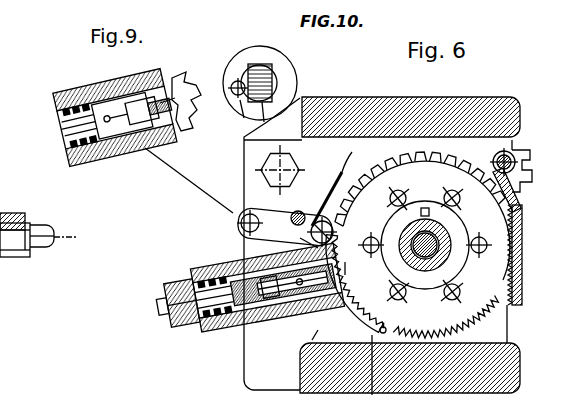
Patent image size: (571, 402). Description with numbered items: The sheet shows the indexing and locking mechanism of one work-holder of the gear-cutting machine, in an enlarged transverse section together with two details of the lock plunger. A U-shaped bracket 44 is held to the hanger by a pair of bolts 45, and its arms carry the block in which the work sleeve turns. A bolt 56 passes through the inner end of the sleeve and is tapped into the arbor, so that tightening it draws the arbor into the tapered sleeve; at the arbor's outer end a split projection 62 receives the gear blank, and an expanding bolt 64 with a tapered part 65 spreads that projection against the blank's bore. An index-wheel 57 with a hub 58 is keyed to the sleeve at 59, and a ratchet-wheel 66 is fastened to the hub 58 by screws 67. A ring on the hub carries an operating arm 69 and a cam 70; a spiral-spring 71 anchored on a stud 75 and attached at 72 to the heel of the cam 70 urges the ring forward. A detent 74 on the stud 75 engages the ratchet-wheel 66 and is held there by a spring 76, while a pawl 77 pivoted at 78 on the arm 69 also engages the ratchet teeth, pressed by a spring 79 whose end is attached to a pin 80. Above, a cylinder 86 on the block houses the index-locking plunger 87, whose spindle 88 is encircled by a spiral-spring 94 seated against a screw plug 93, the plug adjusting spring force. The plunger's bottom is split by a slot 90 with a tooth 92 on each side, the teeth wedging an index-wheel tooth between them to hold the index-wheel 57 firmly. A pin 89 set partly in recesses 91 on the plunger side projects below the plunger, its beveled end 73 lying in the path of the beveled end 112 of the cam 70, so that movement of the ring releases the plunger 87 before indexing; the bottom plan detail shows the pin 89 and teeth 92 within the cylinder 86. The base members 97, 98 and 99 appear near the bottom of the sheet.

In FIG. 6, the U-shaped bracket 44 is at (291, 170).
In FIG. 6, the bolt 45 is at (270, 170).
In FIG. 6, the bolt 56 is at (451, 252).
In FIG. 9, the index-wheel 57 is at (192, 120).
In FIG. 6, the index-wheel 57 is at (440, 155).
In FIG. 6, the hub 58 is at (455, 236).
In FIG. 6, the key 59 is at (420, 213).
In FIG. 6, the split projection 62 is at (5, 215).
In FIG. 6, the expanding bolt 64 is at (42, 231).
In FIG. 6, the tapered part 65 is at (22, 242).
In FIG. 6, the ratchet-wheel 66 is at (467, 312).
In FIG. 6, the screws 67 is at (404, 198).
In FIG. 6, the operating arm 69 is at (240, 222).
In FIG. 6, the cam 70 is at (353, 303).
In FIG. 6, the spiral-spring 71 is at (508, 312).
In FIG. 6, the spring attachment point 72 is at (365, 368).
In FIG. 10, the beveled end of pin 73 is at (231, 88).
In FIG. 6, the beveled end of pin 73 is at (312, 340).
In FIG. 6, the detent 74 is at (512, 190).
In FIG. 6, the stud 75 is at (513, 159).
In FIG. 6, the spring 76 is at (522, 175).
In FIG. 6, the pawl 77 is at (319, 221).
In FIG. 6, the pivot 78 is at (298, 211).
In FIG. 6, the spring 79 is at (333, 189).
In FIG. 6, the pin 80 is at (252, 199).
In FIG. 9, the cylinder 86 is at (115, 118).
In FIG. 10, the cylinder 86 is at (285, 72).
In FIG. 6, the cylinder 86 is at (267, 287).
In FIG. 9, the index-locking plunger 87 is at (115, 117).
In FIG. 10, the index-locking plunger 87 is at (262, 68).
In FIG. 6, the index-locking plunger 87 is at (283, 285).
In FIG. 9, the spindle 88 is at (78, 126).
In FIG. 6, the spindle 88 is at (200, 299).
In FIG. 10, the pin 89 is at (239, 82).
In FIG. 6, the pin 89 is at (299, 281).
In FIG. 9, the slot 90 is at (131, 114).
In FIG. 10, the slot 90 is at (272, 82).
In FIG. 6, the slot 90 is at (269, 287).
In FIG. 9, the recesses 91 is at (160, 106).
In FIG. 9, the teeth 92 is at (160, 104).
In FIG. 10, the teeth 92 is at (265, 70).
In FIG. 6, the teeth 92 is at (300, 238).
In FIG. 6, the screw cap or plug 93 is at (177, 304).
In FIG. 9, the spiral-spring 94 is at (80, 126).
In FIG. 6, the spiral-spring 94 is at (215, 297).
In FIG. 6, the support 97 is at (200, 398).
In FIG. 6, the support 98 is at (293, 398).
In FIG. 6, the base plate 99 is at (130, 401).
In FIG. 6, the beveled end of cam 112 is at (345, 268).